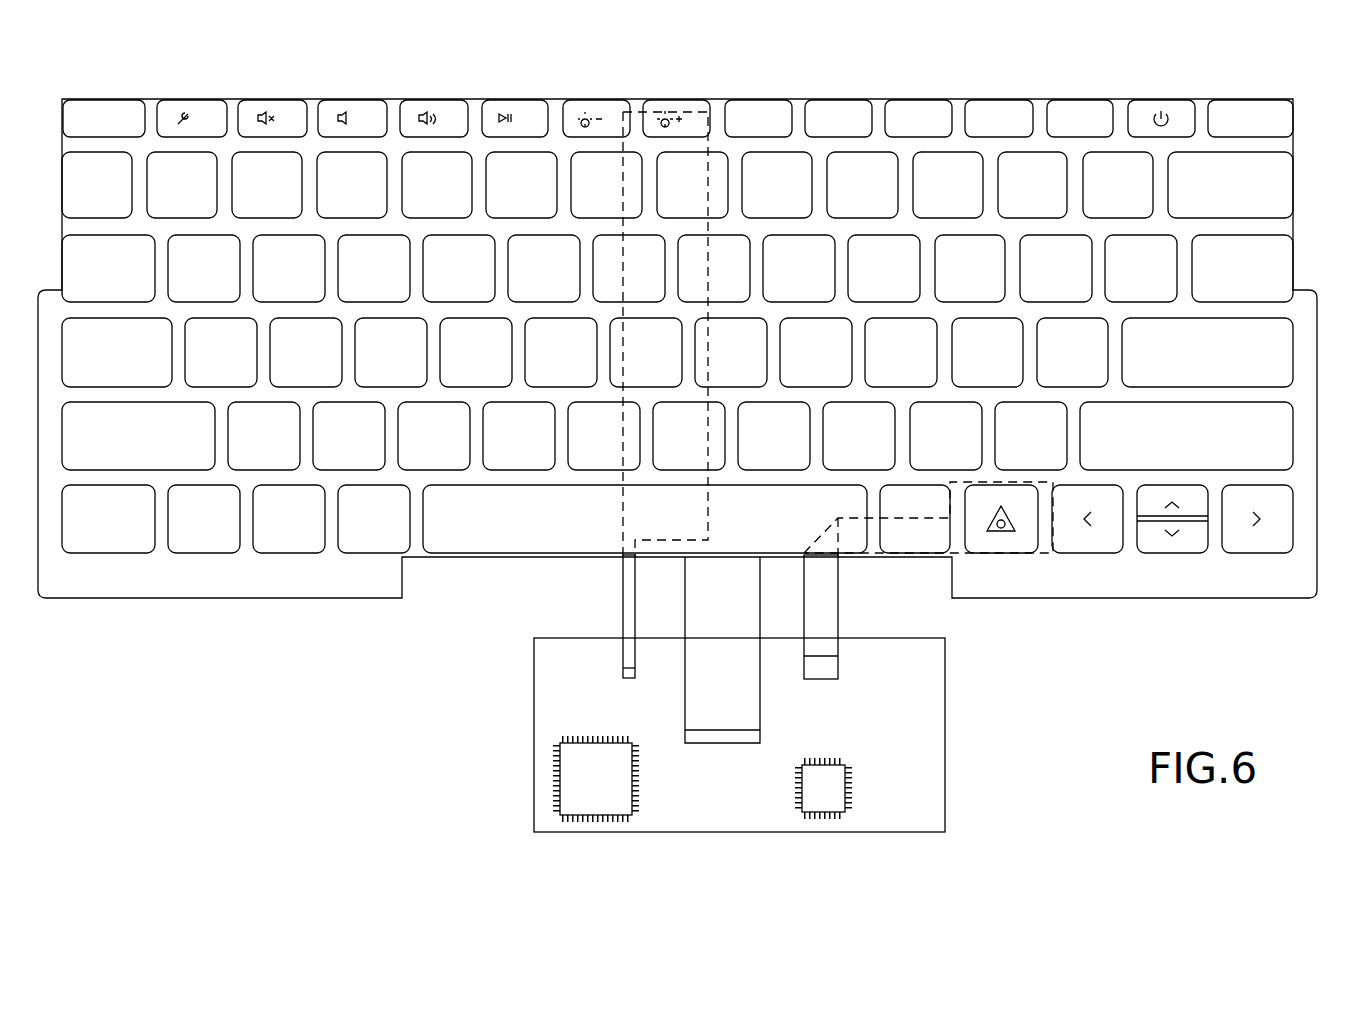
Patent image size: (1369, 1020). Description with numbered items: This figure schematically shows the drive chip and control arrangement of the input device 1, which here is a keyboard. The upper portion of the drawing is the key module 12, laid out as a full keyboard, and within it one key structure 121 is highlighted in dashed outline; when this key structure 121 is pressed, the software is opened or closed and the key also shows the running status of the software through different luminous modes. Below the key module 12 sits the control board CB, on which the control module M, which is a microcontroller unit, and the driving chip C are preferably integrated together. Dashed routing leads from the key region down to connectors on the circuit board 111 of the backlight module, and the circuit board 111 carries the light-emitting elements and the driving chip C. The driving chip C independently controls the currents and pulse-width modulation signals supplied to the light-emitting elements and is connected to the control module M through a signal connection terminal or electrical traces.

The input device 1 is at (246, 60).
The key module 12 is at (1320, 497).
The key structure 121 is at (1038, 527).
The circuit board 111 is at (630, 612).
The control board CB is at (945, 725).
The control module M is at (602, 757).
The driving chip C is at (830, 777).